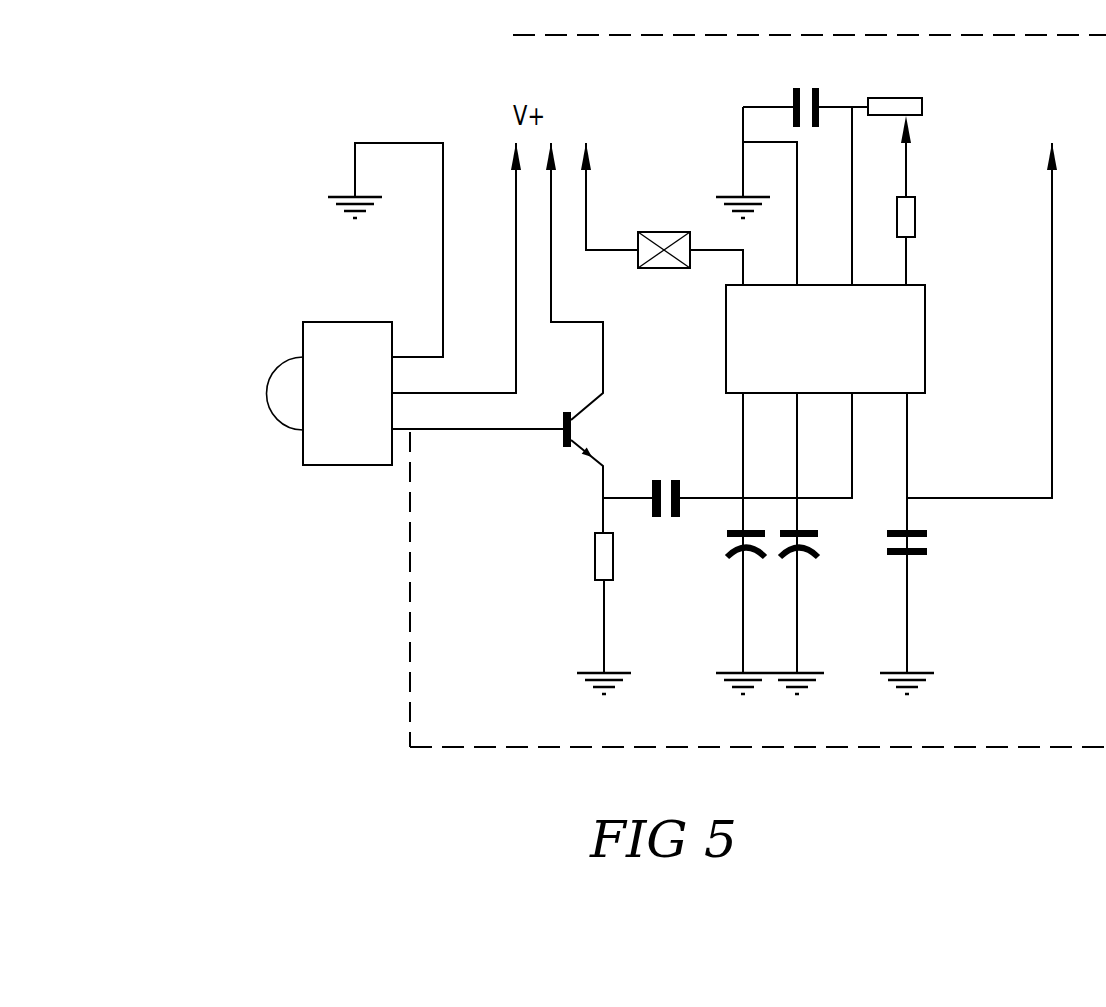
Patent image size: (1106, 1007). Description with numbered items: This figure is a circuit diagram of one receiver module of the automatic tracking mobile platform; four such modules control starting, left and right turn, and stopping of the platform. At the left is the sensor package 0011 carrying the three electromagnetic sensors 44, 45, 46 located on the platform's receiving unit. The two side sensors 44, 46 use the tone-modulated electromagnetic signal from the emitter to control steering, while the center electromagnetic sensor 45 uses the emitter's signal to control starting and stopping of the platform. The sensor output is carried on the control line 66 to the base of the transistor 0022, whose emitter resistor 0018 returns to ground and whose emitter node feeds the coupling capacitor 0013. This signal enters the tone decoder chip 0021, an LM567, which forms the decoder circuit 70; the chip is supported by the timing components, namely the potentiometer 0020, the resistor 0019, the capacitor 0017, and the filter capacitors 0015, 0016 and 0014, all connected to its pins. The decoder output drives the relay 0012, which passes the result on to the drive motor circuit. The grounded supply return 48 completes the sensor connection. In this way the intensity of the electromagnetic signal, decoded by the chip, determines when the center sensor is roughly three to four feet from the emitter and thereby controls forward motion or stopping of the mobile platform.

The steering control circuit 48 is at (373, 221).
The center electromagnetic sensor 45 is at (249, 355).
The electromagnetic sensor 44 is at (302, 337).
The electromagnetic sensor 46 is at (304, 337).
The forward motion control circuit 66 is at (535, 438).
The tone decoder circuit 70 is at (726, 348).
The sensor module 0011 is at (347, 423).
The relay 0012 is at (662, 214).
The capacitor C1 0013 is at (727, 455).
The capacitor C2 0014 is at (981, 398).
The capacitor C3 0015 is at (724, 543).
The capacitor C4 0016 is at (824, 543).
The capacitor C5 0017 is at (792, 166).
The resistor R1 0018 is at (574, 613).
The resistor R2 0019 is at (941, 237).
The potentiometer R3 0020 is at (926, 139).
The LM567 tone decoder IC 0021 is at (873, 339).
The transistor T1 0022 is at (560, 338).